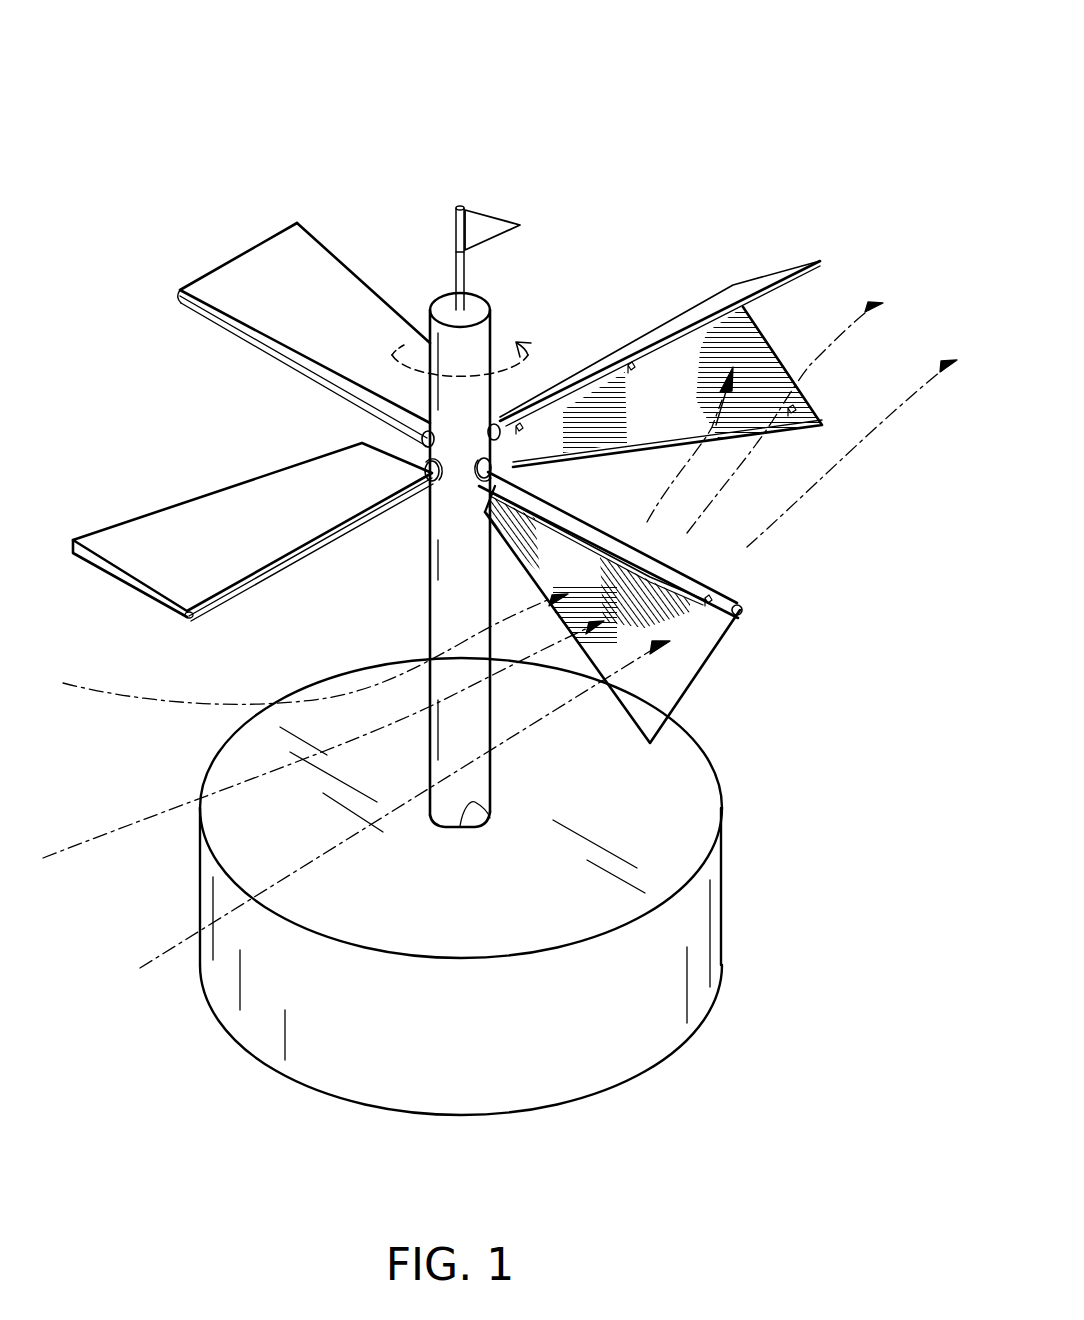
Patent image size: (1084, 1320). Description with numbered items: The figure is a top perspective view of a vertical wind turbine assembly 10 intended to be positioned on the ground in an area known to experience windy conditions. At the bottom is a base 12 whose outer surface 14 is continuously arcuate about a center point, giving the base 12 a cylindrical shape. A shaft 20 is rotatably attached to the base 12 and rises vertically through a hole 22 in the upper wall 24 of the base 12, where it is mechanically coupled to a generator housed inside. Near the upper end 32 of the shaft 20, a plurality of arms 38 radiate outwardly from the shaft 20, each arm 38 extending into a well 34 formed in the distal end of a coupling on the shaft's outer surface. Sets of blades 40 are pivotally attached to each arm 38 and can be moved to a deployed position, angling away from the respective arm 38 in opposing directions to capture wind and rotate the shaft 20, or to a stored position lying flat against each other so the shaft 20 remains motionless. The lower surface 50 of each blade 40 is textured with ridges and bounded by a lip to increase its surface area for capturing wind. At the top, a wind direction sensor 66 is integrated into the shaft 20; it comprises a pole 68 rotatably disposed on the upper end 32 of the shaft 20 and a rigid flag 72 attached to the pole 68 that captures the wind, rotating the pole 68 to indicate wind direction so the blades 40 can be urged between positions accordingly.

The vertical wind turbine assembly 10 is at (654, 167).
The base 12 is at (722, 840).
The outer surface 14 is at (660, 993).
The shaft 20 is at (497, 317).
The hole 22 is at (492, 827).
The upper wall 24 is at (362, 684).
The upper end 32 is at (440, 303).
The well 34 is at (430, 472).
The arms 38 is at (226, 322).
The sets of blades 40 is at (811, 247).
The lower surface 50 is at (792, 414).
The wind direction sensor 66 is at (484, 207).
The pole 68 is at (458, 272).
The flag 72 is at (505, 212).